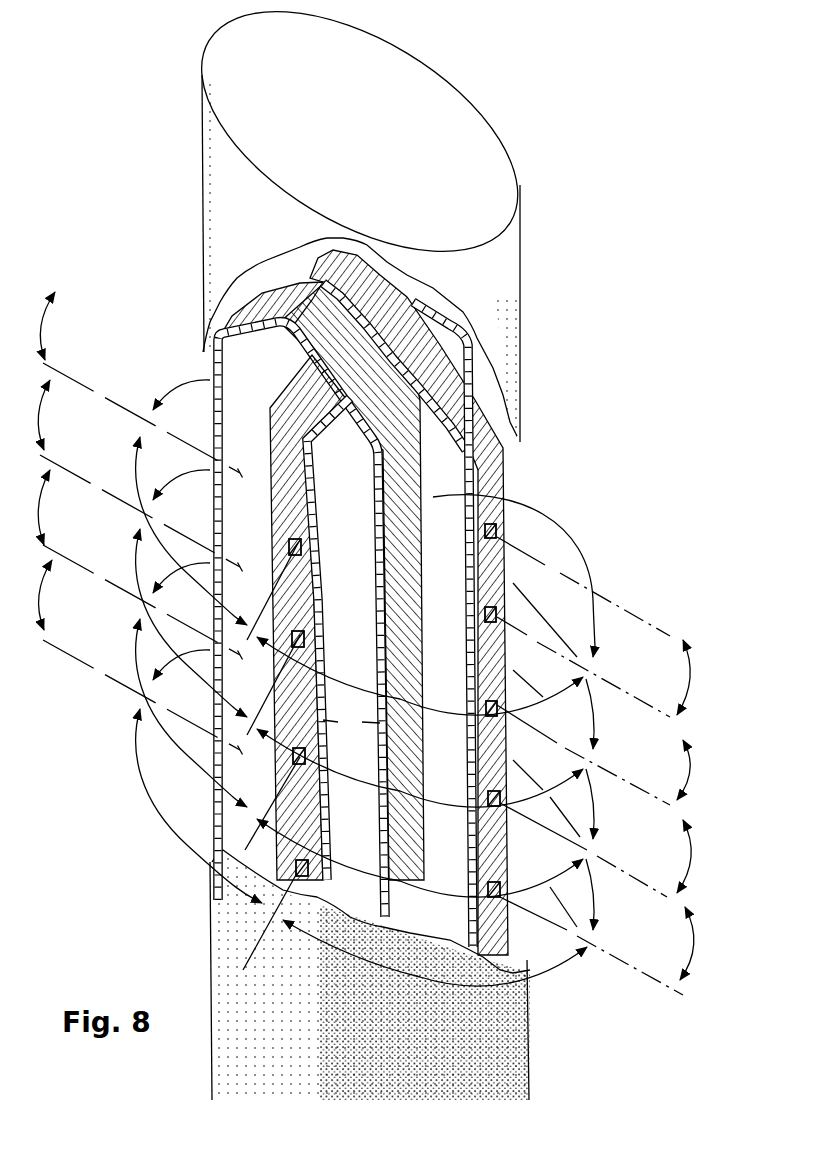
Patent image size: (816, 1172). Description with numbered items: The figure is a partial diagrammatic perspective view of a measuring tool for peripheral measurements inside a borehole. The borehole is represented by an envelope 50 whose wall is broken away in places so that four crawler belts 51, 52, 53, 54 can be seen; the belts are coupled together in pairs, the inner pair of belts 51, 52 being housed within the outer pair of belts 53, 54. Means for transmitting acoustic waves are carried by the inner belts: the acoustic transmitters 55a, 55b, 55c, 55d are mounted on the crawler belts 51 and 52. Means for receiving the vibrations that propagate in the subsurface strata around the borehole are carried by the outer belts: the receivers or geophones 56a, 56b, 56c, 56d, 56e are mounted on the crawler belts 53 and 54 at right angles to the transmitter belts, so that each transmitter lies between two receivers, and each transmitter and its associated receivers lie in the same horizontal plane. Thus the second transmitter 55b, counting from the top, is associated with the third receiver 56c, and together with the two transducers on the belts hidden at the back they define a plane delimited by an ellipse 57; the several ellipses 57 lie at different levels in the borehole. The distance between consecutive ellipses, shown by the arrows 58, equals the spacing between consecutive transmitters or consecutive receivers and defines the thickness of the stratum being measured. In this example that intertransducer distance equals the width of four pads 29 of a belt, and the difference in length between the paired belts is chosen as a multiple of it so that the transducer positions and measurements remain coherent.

The pad 29 is at (351, 723).
The envelope 50 is at (508, 256).
The crawler belt 51 is at (288, 800).
The crawler belt 52 is at (57, 290).
The crawler belt 53 is at (505, 472).
The crawler belt 54 is at (513, 490).
The acoustic transmitter 55a is at (302, 548).
The acoustic transmitter 55b is at (304, 640).
The acoustic transmitter 55c is at (305, 760).
The acoustic transmitter 55d is at (308, 872).
The acoustic receiver 56a is at (485, 532).
The acoustic receiver 56b is at (485, 612).
The acoustic receiver 56c is at (486, 708).
The acoustic receiver 56d is at (488, 797).
The acoustic receiver 56e is at (488, 890).
The ellipse 57 is at (585, 575).
The arrow 58 is at (690, 672).